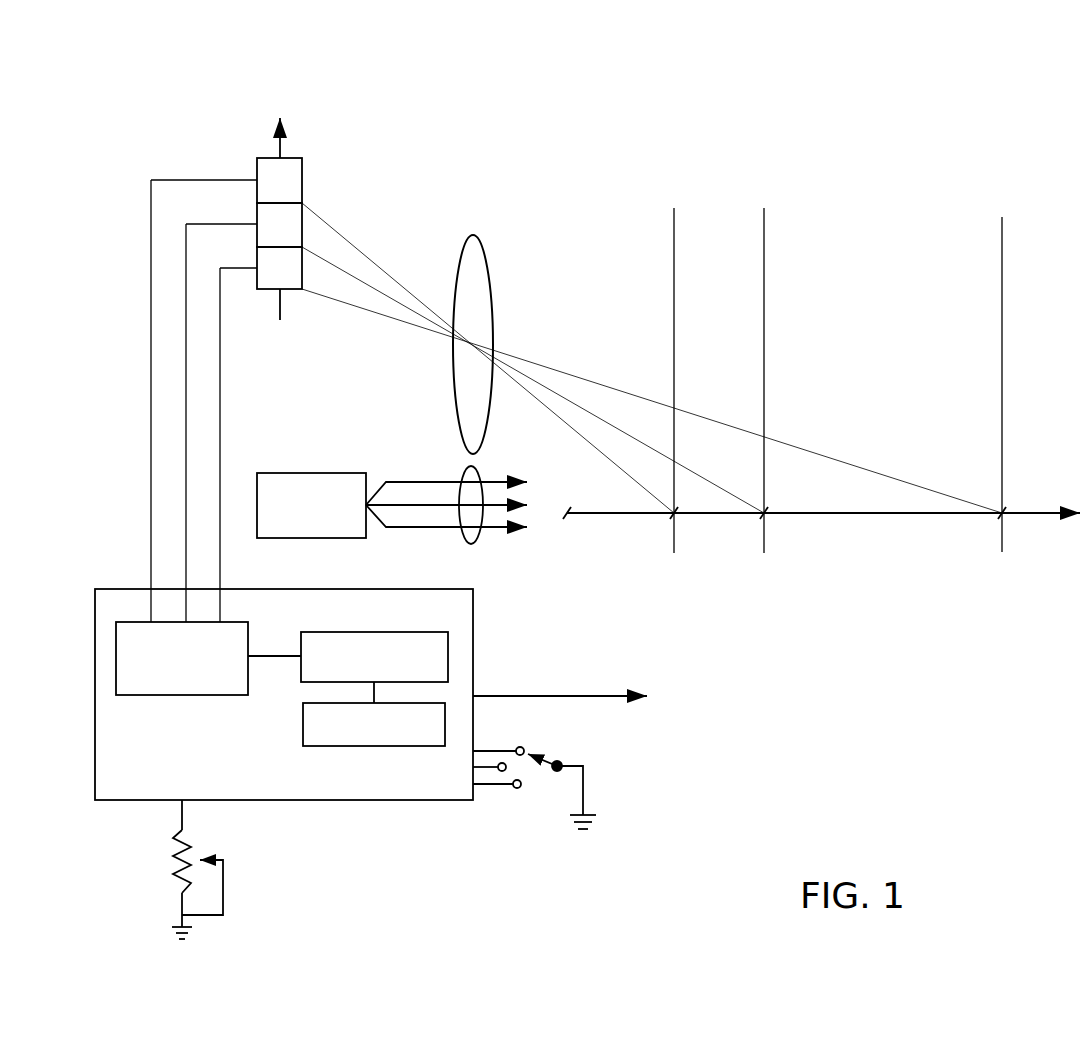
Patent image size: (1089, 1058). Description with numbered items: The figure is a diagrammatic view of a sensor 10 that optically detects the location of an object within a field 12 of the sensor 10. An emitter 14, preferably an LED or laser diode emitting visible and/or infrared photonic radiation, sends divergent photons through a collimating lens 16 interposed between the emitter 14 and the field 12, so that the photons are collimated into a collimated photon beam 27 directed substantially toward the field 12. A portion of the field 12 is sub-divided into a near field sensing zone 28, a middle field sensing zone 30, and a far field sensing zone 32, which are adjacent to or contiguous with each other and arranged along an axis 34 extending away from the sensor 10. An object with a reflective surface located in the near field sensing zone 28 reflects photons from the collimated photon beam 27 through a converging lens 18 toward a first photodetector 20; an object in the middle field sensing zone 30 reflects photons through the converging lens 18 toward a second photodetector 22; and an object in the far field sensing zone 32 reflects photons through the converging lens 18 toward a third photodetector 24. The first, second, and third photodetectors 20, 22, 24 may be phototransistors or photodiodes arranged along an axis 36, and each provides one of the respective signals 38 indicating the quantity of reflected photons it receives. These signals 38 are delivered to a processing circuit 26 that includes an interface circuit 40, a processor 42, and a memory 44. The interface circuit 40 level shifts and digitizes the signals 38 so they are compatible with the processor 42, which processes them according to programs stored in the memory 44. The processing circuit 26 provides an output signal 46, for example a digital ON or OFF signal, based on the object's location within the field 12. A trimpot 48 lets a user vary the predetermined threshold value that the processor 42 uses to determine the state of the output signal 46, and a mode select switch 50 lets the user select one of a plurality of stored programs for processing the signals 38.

The sensor 10 is at (405, 156).
The field 12 is at (809, 335).
The emitter 14 is at (305, 538).
The collimating lens 16 is at (464, 540).
The converging lens 18 is at (487, 262).
The first photodetector 20 is at (256, 172).
The second photodetector 22 is at (256, 216).
The third photodetector 24 is at (273, 291).
The processing circuit 26 is at (473, 614).
The collimated photon beam 27 is at (540, 518).
The near field sensing zone 28 is at (638, 268).
The middle field sensing zone 30 is at (737, 268).
The far field sensing zone 32 is at (885, 267).
The axis 34 is at (1030, 512).
The axis 36 is at (283, 144).
The signals 38 is at (121, 383).
The interface circuit 40 is at (208, 695).
The processor 42 is at (411, 631).
The memory 44 is at (406, 746).
The output signal 46 is at (568, 695).
The trimpot 48 is at (235, 882).
The mode select switch 50 is at (547, 758).